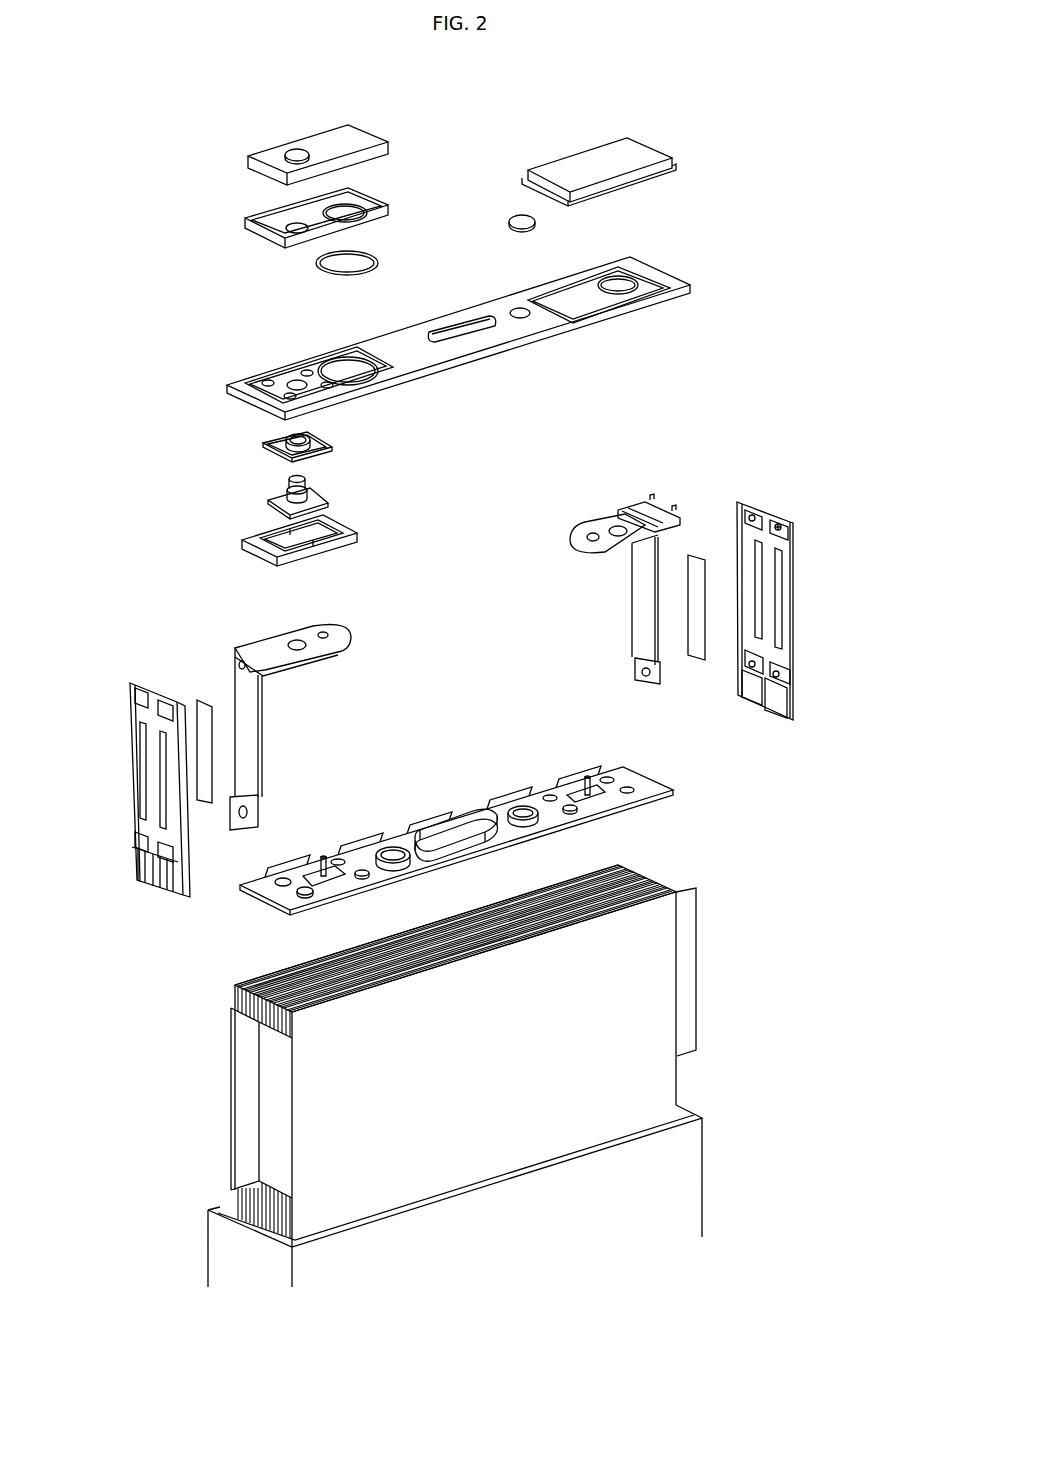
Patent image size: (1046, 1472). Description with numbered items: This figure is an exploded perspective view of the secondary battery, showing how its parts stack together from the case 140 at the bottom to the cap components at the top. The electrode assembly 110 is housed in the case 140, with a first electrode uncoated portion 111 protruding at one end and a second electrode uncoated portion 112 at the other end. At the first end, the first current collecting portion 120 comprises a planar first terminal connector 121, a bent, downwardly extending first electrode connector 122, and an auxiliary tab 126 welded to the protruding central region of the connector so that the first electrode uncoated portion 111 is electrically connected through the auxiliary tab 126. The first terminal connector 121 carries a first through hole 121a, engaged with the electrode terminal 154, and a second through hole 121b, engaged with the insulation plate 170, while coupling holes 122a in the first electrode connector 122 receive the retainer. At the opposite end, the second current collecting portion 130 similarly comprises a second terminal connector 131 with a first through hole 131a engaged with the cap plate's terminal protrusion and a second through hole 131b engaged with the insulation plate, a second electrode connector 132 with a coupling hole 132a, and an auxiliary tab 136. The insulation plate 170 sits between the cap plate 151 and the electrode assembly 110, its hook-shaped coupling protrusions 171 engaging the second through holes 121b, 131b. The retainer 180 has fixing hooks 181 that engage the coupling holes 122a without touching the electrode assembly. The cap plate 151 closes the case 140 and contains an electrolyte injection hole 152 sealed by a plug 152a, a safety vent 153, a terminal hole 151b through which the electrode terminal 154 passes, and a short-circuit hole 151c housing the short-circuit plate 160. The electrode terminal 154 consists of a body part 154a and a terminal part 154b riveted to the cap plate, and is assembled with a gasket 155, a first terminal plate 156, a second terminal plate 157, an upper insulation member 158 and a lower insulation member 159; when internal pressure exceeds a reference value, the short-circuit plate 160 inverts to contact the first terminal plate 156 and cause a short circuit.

The electrode assembly 110 is at (464, 1034).
The first electrode uncoated portion 111 is at (238, 1107).
The second electrode uncoated portion 112 is at (705, 968).
The first current collecting portion 120 is at (252, 699).
The first terminal connector 121 is at (285, 637).
The first through hole 121a is at (300, 650).
The second through hole 121b is at (326, 631).
The first electrode connector 122 is at (264, 719).
The coupling holes 122a is at (250, 808).
The auxiliary tab 126 is at (203, 700).
The second current collecting portion 130 is at (592, 576).
The second terminal connector 131 is at (580, 535).
The first through hole 131a is at (620, 540).
The second through hole 131b is at (578, 530).
The second electrode connector 132 is at (662, 601).
The coupling hole 132a is at (638, 678).
The auxiliary tab 136 is at (690, 655).
The case 140 is at (706, 1183).
The cap plate 151 is at (405, 330).
The terminal hole 151b is at (290, 375).
The short-circuit hole 151c is at (340, 358).
The electrolyte injection hole 152 is at (518, 308).
The plug 152a is at (518, 215).
The safety vent 153 is at (456, 322).
The electrode terminal 154 is at (223, 485).
The body part 154a is at (272, 498).
The terminal part 154b is at (290, 483).
The gasket 155 is at (275, 435).
The first terminal plate 156 is at (320, 140).
The second terminal plate 157 is at (588, 152).
The upper insulation member 158 is at (245, 222).
The lower insulation member 159 is at (245, 540).
The short-circuit plate 160 is at (317, 264).
The insulation plate 170 is at (655, 771).
The coupling protrusions 171 is at (327, 858).
The retainer 180 is at (130, 765).
The fixing hooks 181 is at (780, 523).